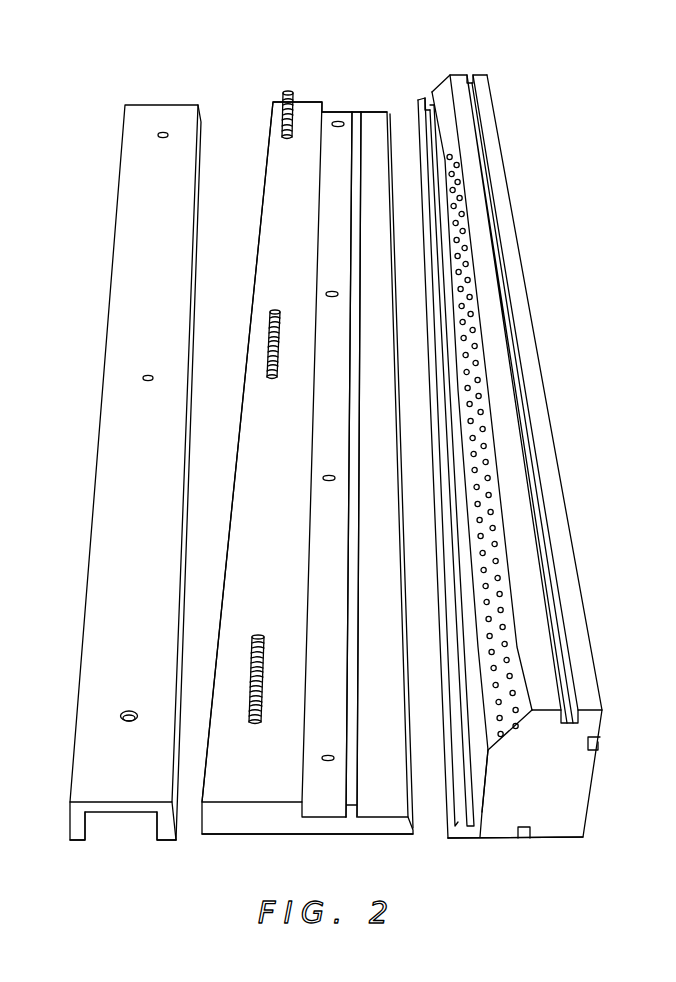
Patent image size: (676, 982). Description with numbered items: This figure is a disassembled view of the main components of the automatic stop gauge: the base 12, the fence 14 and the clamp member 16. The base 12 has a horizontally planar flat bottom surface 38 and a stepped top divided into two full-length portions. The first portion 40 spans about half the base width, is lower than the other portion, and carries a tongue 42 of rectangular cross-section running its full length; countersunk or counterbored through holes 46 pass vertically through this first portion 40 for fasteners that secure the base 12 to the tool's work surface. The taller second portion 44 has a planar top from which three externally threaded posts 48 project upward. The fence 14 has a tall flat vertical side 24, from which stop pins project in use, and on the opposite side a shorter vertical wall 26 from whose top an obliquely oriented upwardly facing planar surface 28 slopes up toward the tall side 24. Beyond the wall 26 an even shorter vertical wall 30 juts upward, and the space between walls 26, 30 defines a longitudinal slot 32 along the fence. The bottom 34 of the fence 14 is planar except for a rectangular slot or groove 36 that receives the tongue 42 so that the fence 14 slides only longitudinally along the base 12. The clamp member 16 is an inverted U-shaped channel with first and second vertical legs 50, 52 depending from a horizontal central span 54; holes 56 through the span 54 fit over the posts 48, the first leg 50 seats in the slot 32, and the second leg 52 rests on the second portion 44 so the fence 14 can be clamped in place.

The base 12 is at (286, 841).
The fence 14 is at (540, 338).
The clamp member 16 is at (106, 318).
The flat vertical side 24 is at (596, 784).
The shorter vertical wall 26 is at (481, 750).
The obliquely oriented upwardly facing planar surface 28 is at (512, 656).
The even shorter vertical wall 30 is at (452, 840).
The longitudinal slot 32 is at (478, 832).
The bottom of the fence 34 is at (572, 840).
The rectangular slot or groove 36 is at (521, 840).
The flat bottom surface 38 is at (253, 846).
The first portion 40 is at (377, 120).
The tongue 42 is at (350, 680).
The second portion 44 is at (283, 180).
The countersunk or counterbored through holes 46 is at (338, 121).
The externally threaded posts 48 is at (262, 632).
The first vertical leg 50 is at (166, 844).
The second vertical leg 52 is at (79, 844).
The horizontal central span 54 is at (122, 814).
The holes 56 is at (163, 132).